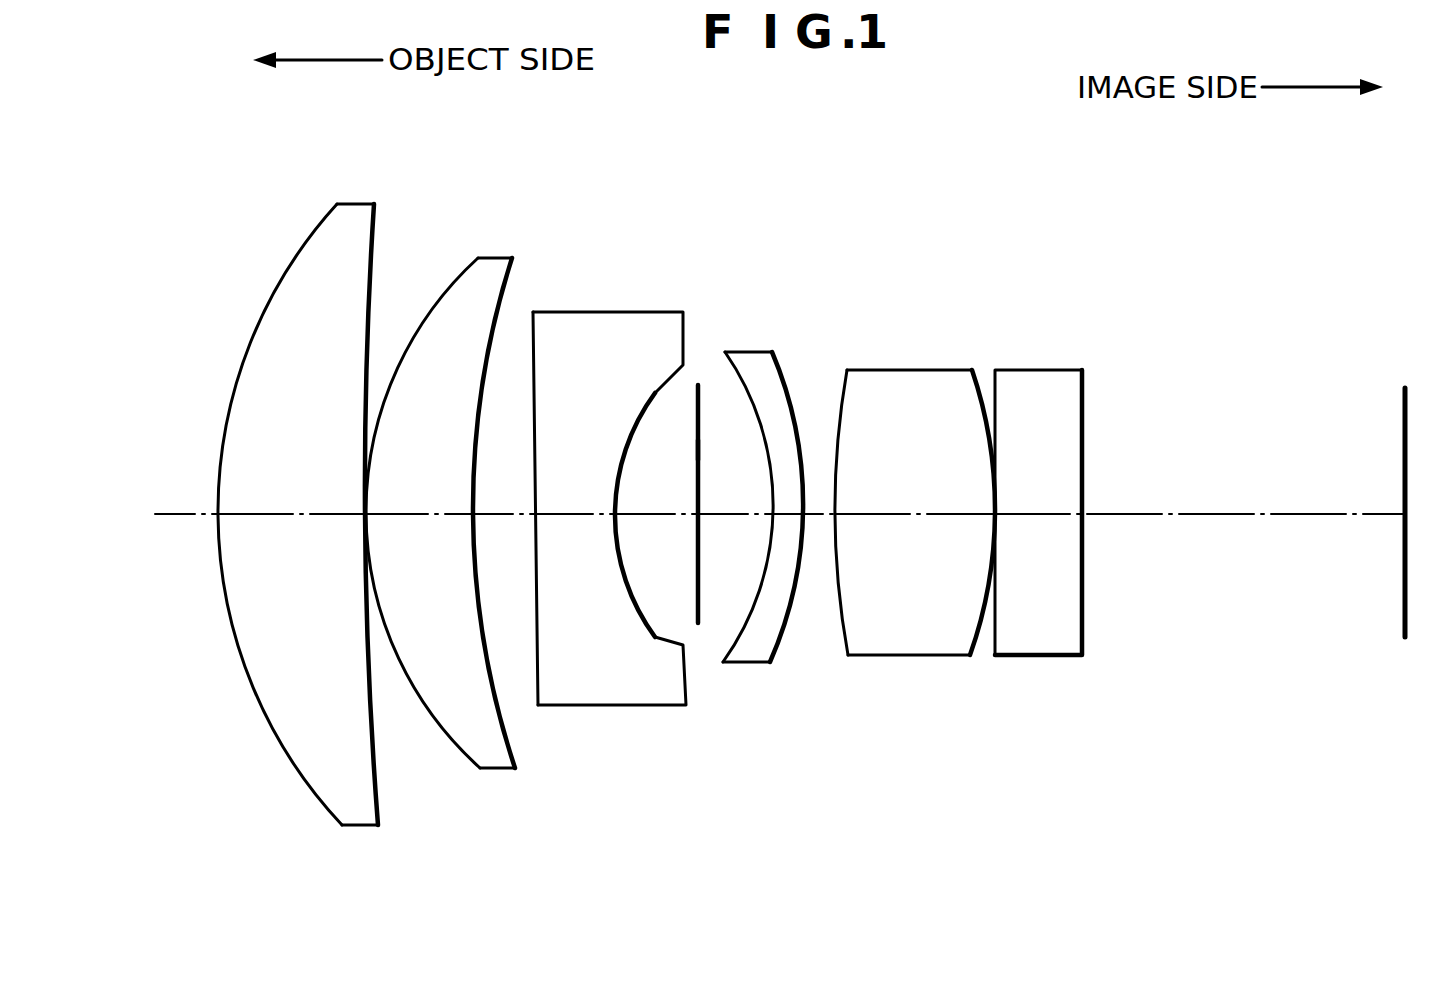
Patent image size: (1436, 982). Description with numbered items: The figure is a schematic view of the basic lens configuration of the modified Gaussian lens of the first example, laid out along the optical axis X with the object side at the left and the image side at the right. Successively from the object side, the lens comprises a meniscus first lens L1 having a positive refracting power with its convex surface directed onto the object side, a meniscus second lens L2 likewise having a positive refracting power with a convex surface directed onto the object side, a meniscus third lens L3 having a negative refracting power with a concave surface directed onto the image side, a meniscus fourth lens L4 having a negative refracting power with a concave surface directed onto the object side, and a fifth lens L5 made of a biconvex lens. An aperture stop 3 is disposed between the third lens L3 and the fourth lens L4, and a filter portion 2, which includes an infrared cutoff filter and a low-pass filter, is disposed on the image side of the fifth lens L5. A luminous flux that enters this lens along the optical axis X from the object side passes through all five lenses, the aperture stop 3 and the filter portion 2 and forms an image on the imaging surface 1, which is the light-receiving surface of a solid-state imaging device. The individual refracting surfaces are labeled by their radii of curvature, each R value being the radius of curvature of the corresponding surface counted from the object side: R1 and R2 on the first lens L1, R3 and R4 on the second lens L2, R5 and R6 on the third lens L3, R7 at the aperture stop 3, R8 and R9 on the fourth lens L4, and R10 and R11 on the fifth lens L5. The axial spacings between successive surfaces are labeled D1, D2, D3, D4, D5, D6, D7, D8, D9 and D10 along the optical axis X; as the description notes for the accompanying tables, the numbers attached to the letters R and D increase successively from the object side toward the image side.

The imaging surface 1 is at (1402, 411).
The filter portion 2 is at (1062, 369).
The aperture stop 3 is at (699, 504).
The optical axis X is at (173, 519).
The first lens L1 is at (325, 482).
The second lens L2 is at (463, 479).
The third lens L3 is at (588, 479).
The fourth lens L4 is at (759, 467).
The fifth lens L5 is at (924, 483).
The radius of curvature of the first surface R1 is at (292, 264).
The radius of curvature of the second surface R2 is at (376, 212).
The radius of curvature of the third surface R3 is at (443, 292).
The radius of curvature of the fourth surface R4 is at (515, 285).
The radius of curvature of the fifth surface R5 is at (532, 401).
The radius of curvature of the sixth surface R6 is at (656, 404).
The radius of curvature of the seventh surface R7 is at (700, 450).
The radius of curvature of the eighth surface R8 is at (730, 379).
The radius of curvature of the ninth surface R9 is at (788, 372).
The radius of curvature of the tenth surface R10 is at (836, 385).
The radius of curvature of the eleventh surface R11 is at (980, 385).
The first axial surface spacing D1 is at (268, 512).
The second axial surface spacing D2 is at (362, 512).
The third axial surface spacing D3 is at (434, 512).
The fourth axial surface spacing D4 is at (490, 512).
The fifth axial surface spacing D5 is at (566, 510).
The sixth axial surface spacing D6 is at (657, 512).
The seventh axial surface spacing D7 is at (722, 512).
The eighth axial surface spacing D8 is at (784, 512).
The ninth axial surface spacing D9 is at (822, 512).
The tenth axial surface spacing D10 is at (928, 512).